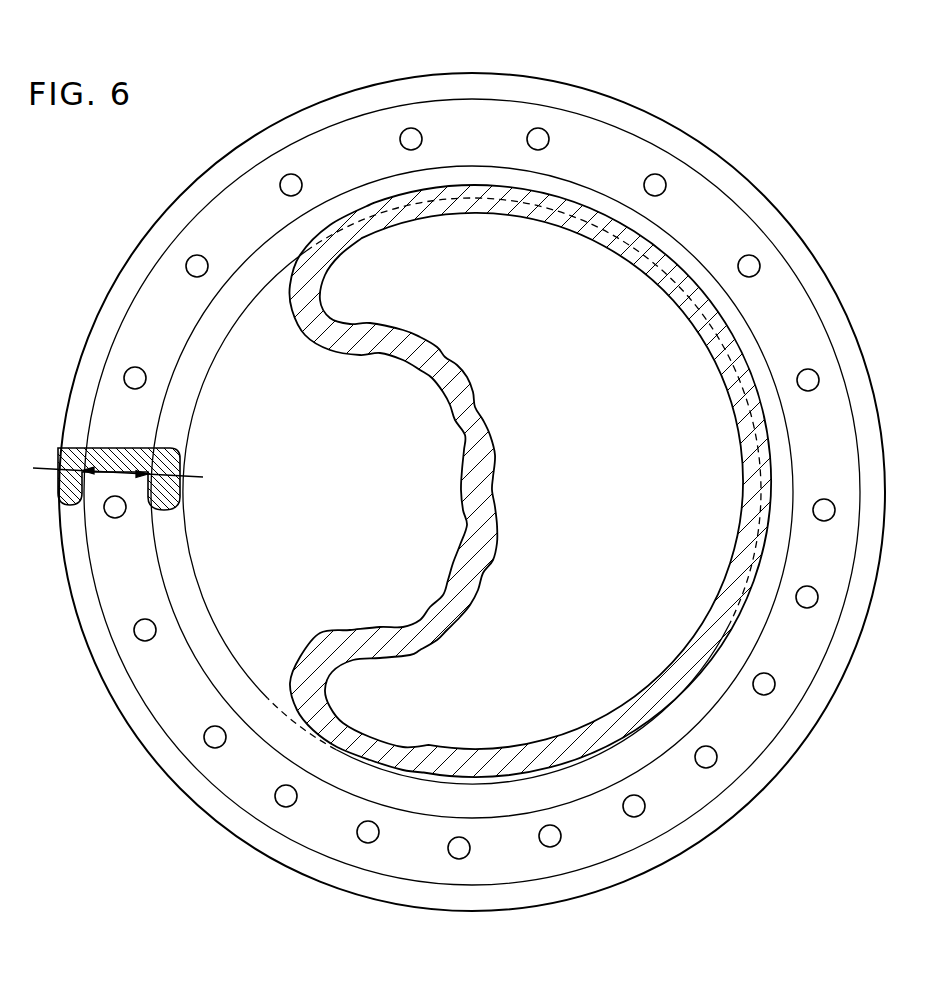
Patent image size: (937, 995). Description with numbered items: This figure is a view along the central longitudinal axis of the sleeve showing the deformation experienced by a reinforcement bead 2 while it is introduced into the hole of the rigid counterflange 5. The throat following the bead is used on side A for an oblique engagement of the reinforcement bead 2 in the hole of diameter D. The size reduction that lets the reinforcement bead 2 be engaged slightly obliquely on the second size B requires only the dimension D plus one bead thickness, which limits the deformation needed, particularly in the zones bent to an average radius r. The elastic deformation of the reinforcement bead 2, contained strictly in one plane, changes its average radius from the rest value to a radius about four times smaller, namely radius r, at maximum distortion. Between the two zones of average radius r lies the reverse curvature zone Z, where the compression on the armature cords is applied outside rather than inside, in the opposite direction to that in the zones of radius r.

The reinforcement bead 2 is at (380, 227).
The rigid counterflange 5 is at (598, 153).
The side of oblique engagement A is at (773, 345).
The hole diameter D is at (803, 568).
The reverse curvature zone Z is at (464, 663).
The second size B is at (422, 782).
The average radius of bent zone r is at (312, 300).